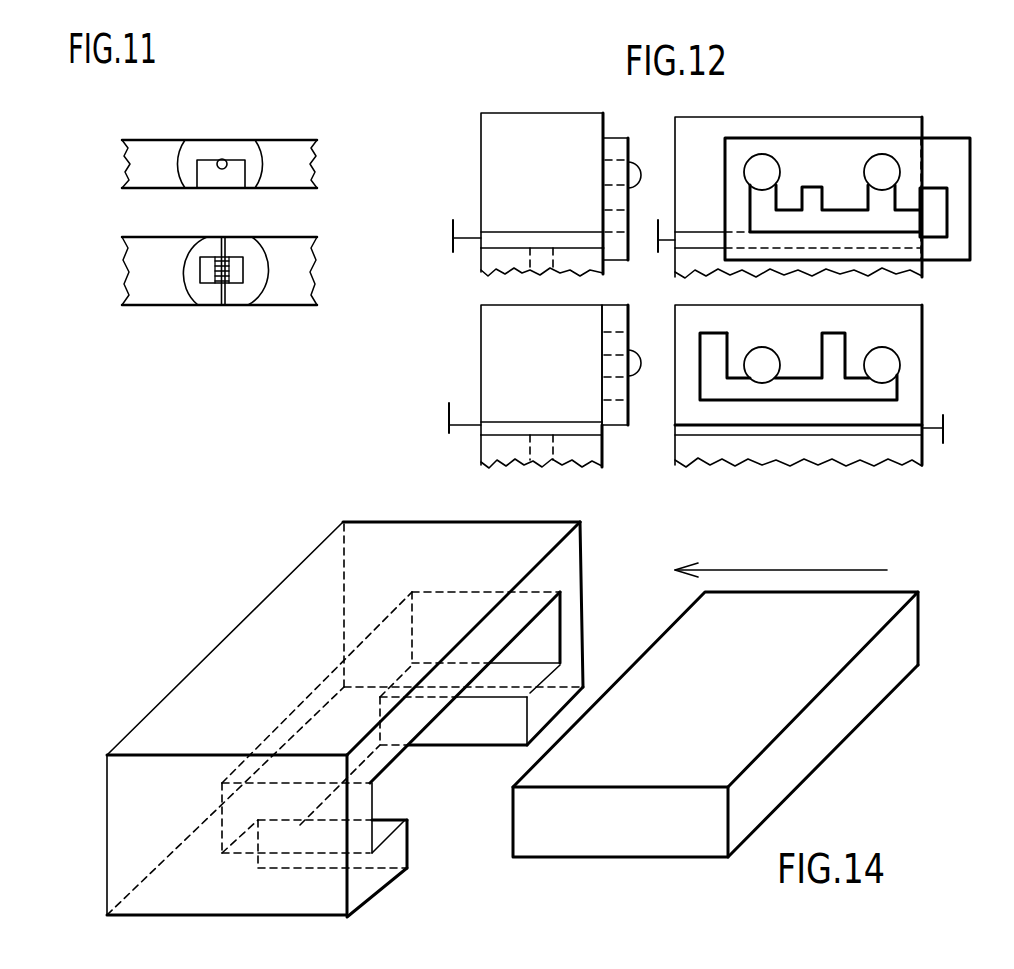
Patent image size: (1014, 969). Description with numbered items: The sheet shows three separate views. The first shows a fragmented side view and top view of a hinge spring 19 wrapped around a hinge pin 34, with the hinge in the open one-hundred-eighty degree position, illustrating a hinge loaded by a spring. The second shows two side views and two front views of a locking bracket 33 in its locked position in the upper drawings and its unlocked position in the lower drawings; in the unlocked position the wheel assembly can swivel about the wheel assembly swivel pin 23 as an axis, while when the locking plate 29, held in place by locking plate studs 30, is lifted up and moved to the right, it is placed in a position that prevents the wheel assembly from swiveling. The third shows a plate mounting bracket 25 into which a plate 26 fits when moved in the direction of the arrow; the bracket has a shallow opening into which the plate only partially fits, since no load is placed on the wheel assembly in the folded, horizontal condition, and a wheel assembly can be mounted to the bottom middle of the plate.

In FIG. 11, the hinge spring 19 is at (204, 159).
In FIG. 11, the hinge pin 34 is at (227, 158).
In FIG. 12, the locking bracket 33 is at (481, 170).
In FIG. 12, the wheel assembly swivel pin 23 is at (530, 259).
In FIG. 12, the locking plate studs 30 is at (766, 155).
In FIG. 12, the locking plate 29 is at (950, 260).
In FIG. 14, the plate mounting bracket 25 is at (247, 608).
In FIG. 14, the plate 26 is at (826, 764).